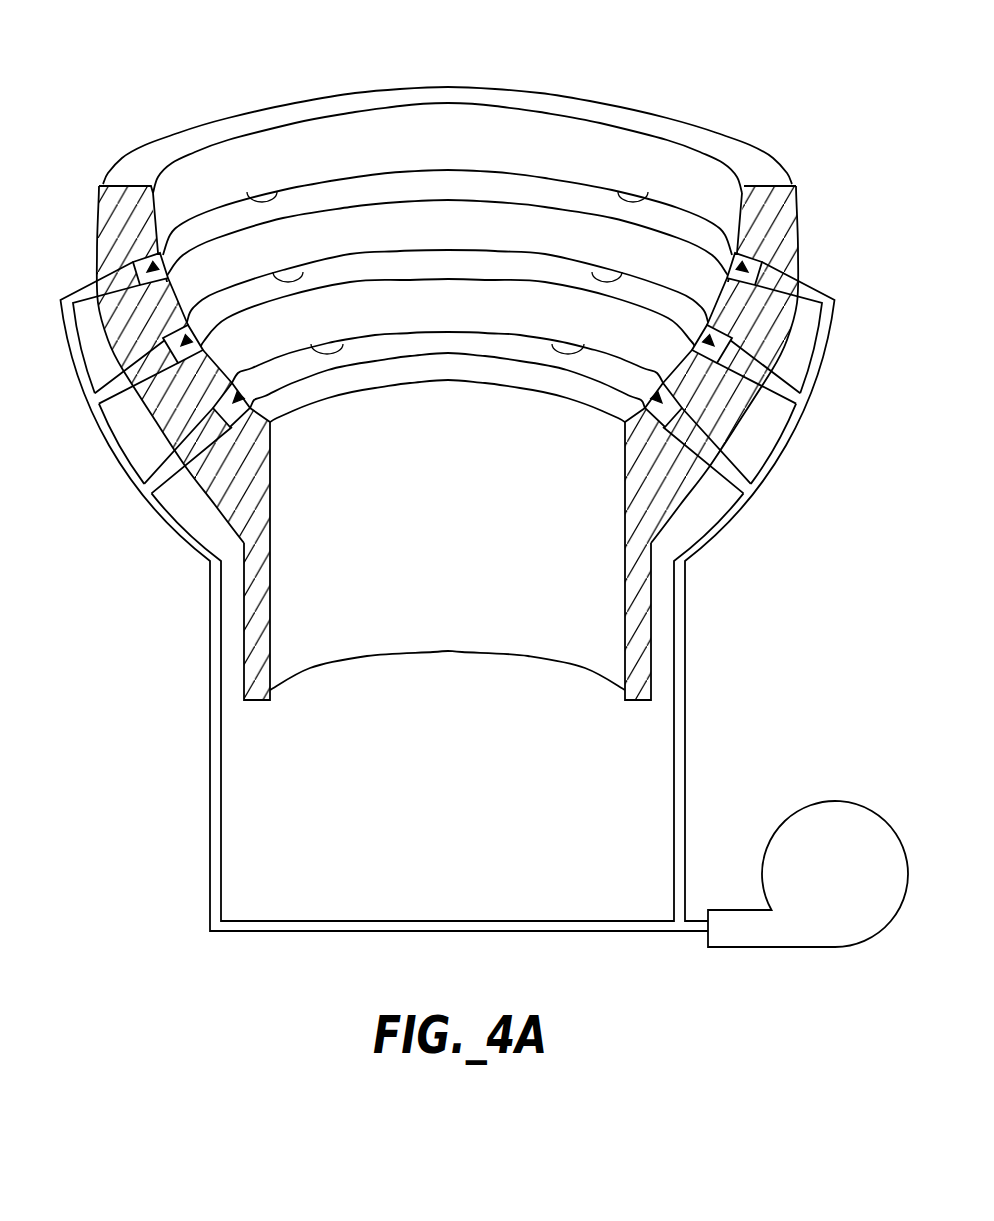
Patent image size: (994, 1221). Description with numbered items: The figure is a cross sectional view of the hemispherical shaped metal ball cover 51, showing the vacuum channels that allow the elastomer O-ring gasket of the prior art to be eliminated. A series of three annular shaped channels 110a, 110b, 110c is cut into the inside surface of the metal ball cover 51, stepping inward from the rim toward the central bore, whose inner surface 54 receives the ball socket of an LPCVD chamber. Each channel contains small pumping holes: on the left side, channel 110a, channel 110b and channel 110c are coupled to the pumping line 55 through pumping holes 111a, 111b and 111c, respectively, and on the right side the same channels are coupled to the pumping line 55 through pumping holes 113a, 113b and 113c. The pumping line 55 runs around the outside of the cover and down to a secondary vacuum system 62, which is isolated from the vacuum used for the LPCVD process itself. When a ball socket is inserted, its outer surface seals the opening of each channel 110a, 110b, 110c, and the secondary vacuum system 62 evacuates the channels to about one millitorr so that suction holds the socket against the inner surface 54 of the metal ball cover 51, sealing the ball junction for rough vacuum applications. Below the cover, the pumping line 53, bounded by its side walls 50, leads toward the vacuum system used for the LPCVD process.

The side walls 50 is at (257, 700).
The metal ball cover 51 is at (117, 223).
The pumping line 53 is at (445, 620).
The inner surface 54 is at (432, 130).
The pumping line 55 is at (117, 457).
The secondary vacuum system 62 is at (829, 815).
The channel 110a is at (276, 194).
The channel 110b is at (301, 272).
The channel 110c is at (338, 344).
The pumping hole 111a is at (156, 265).
The pumping hole 111b is at (189, 338).
The pumping hole 111c is at (241, 395).
The pumping hole 113a is at (739, 265).
The pumping hole 113b is at (706, 338).
The pumping hole 113c is at (654, 395).